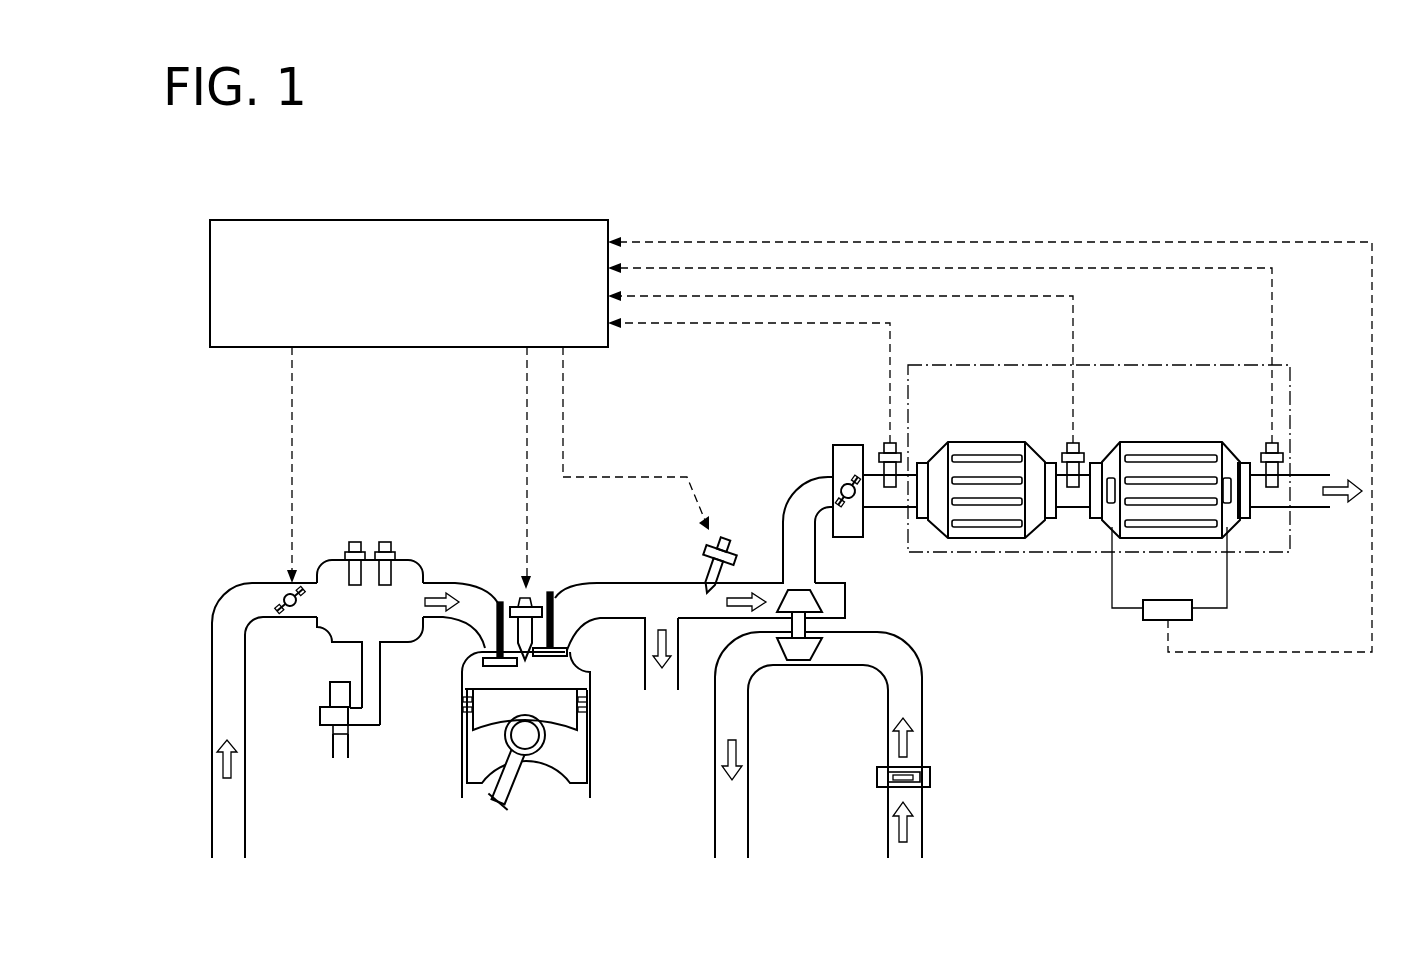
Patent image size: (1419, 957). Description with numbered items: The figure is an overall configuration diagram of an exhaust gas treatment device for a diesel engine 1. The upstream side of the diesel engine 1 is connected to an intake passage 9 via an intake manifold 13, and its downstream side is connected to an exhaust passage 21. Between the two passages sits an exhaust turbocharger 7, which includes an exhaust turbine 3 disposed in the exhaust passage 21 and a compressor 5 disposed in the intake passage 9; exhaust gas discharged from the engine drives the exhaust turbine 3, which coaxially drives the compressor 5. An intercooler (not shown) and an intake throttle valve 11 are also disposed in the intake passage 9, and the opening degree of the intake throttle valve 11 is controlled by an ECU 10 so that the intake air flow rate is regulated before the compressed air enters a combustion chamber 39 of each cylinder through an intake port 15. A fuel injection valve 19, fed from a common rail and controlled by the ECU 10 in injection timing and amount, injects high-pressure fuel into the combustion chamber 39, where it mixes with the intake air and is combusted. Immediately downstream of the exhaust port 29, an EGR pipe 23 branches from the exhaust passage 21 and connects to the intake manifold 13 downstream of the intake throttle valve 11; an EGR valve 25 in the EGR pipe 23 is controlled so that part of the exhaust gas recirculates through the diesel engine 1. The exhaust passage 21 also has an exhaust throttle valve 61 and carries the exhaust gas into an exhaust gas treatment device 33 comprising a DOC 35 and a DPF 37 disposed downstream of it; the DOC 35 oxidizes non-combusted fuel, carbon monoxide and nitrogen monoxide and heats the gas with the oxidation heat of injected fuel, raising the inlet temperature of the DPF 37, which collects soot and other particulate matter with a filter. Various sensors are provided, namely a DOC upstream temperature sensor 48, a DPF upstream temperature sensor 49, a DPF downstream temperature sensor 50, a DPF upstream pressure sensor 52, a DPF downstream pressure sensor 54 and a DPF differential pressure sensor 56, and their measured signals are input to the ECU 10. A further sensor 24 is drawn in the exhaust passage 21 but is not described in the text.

The diesel engine 1 is at (425, 790).
The exhaust turbine 3 is at (800, 592).
The compressor 5 is at (800, 650).
The exhaust turbocharger 7 is at (850, 622).
The intake passage 9 is at (212, 713).
The ECU 10 is at (407, 220).
The intake throttle valve 11 is at (289, 591).
The intake manifold 13 is at (420, 572).
The intake port 15 is at (465, 623).
The fuel injection valve 19 is at (536, 606).
The exhaust passage 21 is at (652, 583).
The EGR pipe 23 is at (330, 745).
The exhaust sensor 24 is at (722, 540).
The EGR valve 25 is at (330, 686).
The exhaust port 29 is at (588, 624).
The exhaust gas treatment device 33 is at (1182, 362).
The DOC 35 is at (985, 527).
The DPF 37 is at (1140, 527).
The combustion chamber 39 is at (528, 678).
The DOC upstream temperature sensor 48 is at (886, 450).
The DPF upstream temperature sensor 49 is at (1068, 450).
The DPF downstream temperature sensor 50 is at (1283, 450).
The DPF upstream pressure sensor 52 is at (1109, 476).
The DPF downstream pressure sensor 54 is at (1229, 476).
The DPF differential pressure sensor 56 is at (1157, 622).
The exhaust throttle valve 61 is at (833, 460).